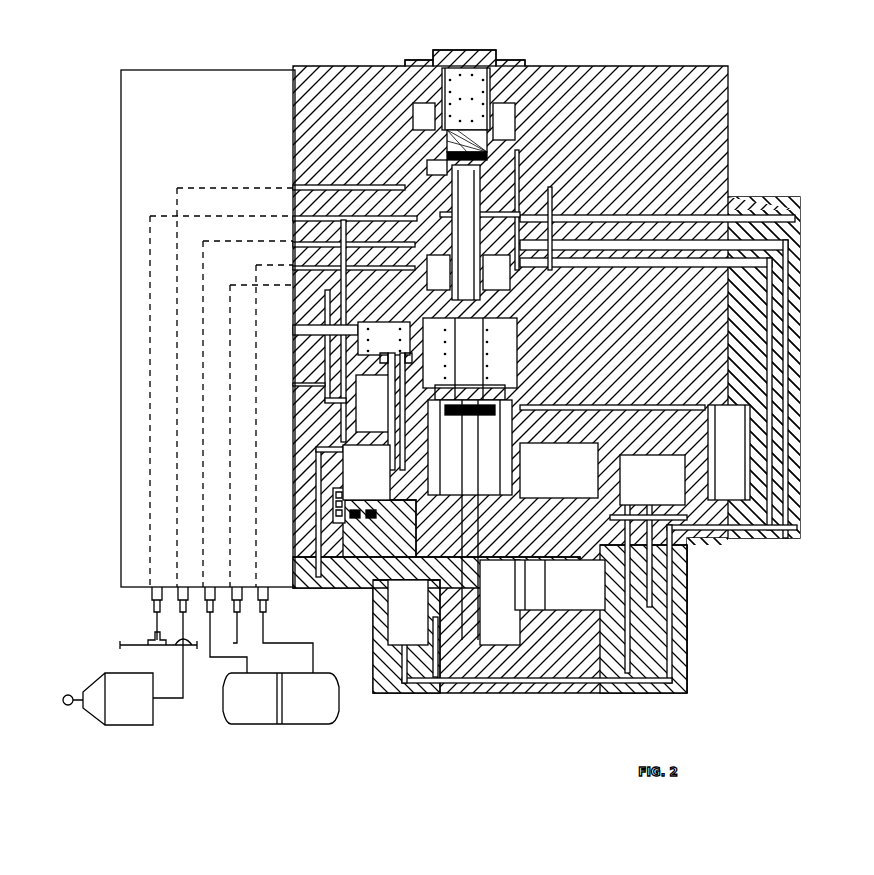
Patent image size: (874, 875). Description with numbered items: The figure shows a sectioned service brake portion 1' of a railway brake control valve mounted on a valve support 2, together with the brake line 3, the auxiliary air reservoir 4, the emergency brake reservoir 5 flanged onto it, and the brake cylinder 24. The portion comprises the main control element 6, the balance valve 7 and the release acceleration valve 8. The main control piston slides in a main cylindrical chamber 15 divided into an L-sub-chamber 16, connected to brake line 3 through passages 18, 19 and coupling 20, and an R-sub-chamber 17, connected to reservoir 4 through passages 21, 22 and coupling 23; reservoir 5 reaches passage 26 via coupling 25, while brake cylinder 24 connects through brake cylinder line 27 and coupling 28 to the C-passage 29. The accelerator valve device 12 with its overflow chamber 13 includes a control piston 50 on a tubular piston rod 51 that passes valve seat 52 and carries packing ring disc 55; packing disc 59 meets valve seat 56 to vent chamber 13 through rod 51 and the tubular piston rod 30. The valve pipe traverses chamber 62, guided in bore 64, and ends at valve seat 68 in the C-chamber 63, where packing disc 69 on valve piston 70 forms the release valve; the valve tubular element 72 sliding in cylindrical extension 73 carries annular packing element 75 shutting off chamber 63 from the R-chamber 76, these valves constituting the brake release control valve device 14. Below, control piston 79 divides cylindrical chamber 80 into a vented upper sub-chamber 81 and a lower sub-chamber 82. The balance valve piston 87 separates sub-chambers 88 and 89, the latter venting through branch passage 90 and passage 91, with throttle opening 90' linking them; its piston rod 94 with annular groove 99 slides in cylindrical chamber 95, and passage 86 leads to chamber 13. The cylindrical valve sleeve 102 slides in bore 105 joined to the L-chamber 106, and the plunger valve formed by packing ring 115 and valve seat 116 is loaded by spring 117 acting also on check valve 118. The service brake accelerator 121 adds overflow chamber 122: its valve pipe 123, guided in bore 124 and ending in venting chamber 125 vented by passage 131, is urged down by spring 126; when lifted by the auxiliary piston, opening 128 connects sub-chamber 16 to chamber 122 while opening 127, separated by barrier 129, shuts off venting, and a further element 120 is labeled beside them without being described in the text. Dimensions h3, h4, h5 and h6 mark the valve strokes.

The service brake portion 1' is at (437, 437).
The valve support member 2 is at (185, 72).
The brake line 3 is at (125, 643).
The auxiliary air reservoir 4 is at (333, 710).
The emergency brake reservoir 5 is at (227, 705).
The main control element 6 is at (332, 575).
The balance valve 7 is at (752, 420).
The release acceleration valve 8 is at (410, 640).
The accelerator valve device 12 is at (478, 455).
The overflow chamber 13 is at (470, 359).
The brake release control valve device 14 is at (433, 219).
The main cylindrical chamber 15 is at (335, 460).
The L-sub-chamber 16 is at (366, 472).
The R-sub-chamber 17 is at (500, 602).
The passage 18 is at (345, 414).
The passage 19 is at (293, 218).
The coupling 20 is at (151, 601).
The passage 21 is at (790, 320).
The passage 22 is at (293, 268).
The coupling 23 is at (266, 608).
The brake cylinder 24 is at (95, 680).
The coupling 25 is at (207, 612).
The passage 26 is at (293, 244).
The brake cylinder line 27 is at (180, 700).
The coupling 28 is at (180, 612).
The C-passage 29 is at (293, 188).
The tubular piston rod 30 is at (480, 640).
The control piston 50 is at (447, 452).
The tubular piston rod 51 is at (496, 472).
The valve seat 52 is at (438, 468).
The packing ring disc 55 is at (500, 431).
The valve seat 56 is at (505, 405).
The packing disc 59 is at (471, 379).
The chamber 62 is at (499, 196).
The C-chamber 63 is at (440, 166).
The bore 64 is at (445, 306).
The valve seat 68 is at (466, 232).
The packing disc 69 is at (445, 158).
The valve piston 70 is at (445, 136).
The valve tubular element 72 is at (432, 75).
The cylindrical extension 73 is at (495, 68).
The annular packing element 75 is at (440, 147).
The R-chamber 76 is at (420, 106).
The control piston 79 is at (450, 645).
The cylindrical chamber 80 is at (445, 655).
The upper sub-chamber 81 is at (436, 640).
The lower sub-chamber 82 is at (468, 650).
The passage 86 is at (722, 478).
The piston 87 is at (712, 454).
The sub-chamber 88 is at (740, 407).
The sub-chamber 89 is at (690, 540).
The branch passage 90 is at (578, 429).
The throttle opening 90' is at (708, 380).
The passage 91 is at (293, 294).
The piston rod 94 is at (639, 497).
The cylindrical chamber 95 is at (660, 495).
The annular groove 99 is at (640, 455).
The cylindrical valve sleeve 102 is at (557, 512).
The bore 105 is at (545, 596).
The L-chamber 106 is at (545, 575).
The packing ring 115 is at (390, 613).
The valve seat 116 is at (390, 597).
The spring 117 is at (390, 630).
The check valve 118 is at (392, 640).
The seal 120 is at (414, 474).
The service brake accelerator 121 is at (340, 437).
The overflow chamber 122 is at (350, 380).
The valve pipe 123 is at (388, 404).
The bore 124 is at (386, 450).
The venting chamber 125 is at (340, 338).
The spring 126 is at (385, 320).
The constricted opening 127 is at (388, 385).
The constricted opening 128 is at (414, 458).
The barrier 129 is at (390, 424).
The passage 131 is at (300, 325).
The stroke h3 is at (583, 455).
The stroke h4 is at (530, 468).
The stroke h5 is at (552, 187).
The stroke h6 is at (555, 147).